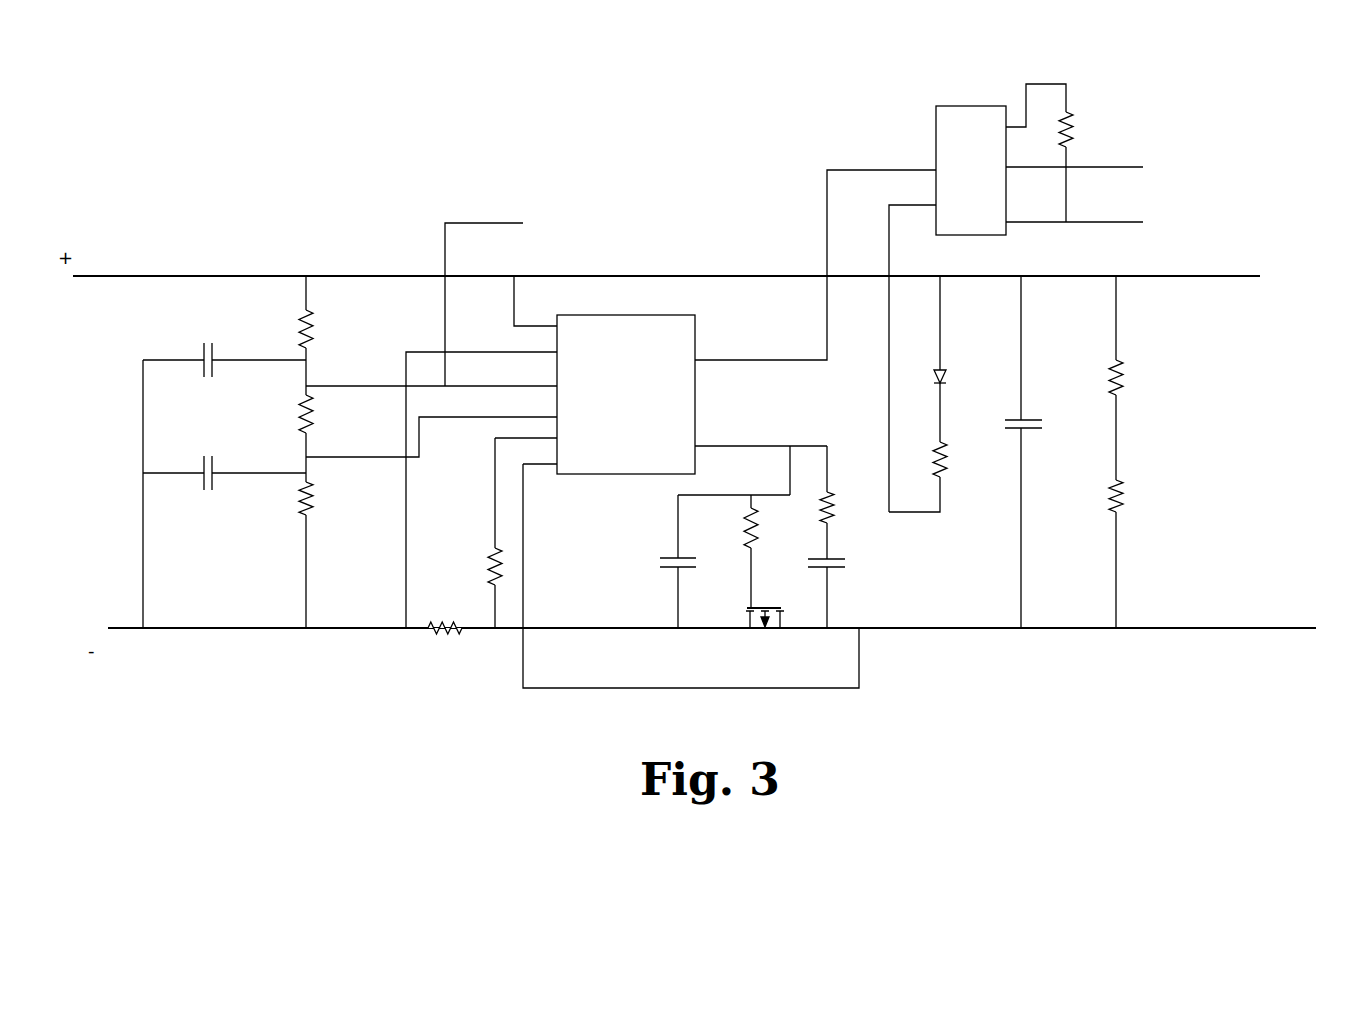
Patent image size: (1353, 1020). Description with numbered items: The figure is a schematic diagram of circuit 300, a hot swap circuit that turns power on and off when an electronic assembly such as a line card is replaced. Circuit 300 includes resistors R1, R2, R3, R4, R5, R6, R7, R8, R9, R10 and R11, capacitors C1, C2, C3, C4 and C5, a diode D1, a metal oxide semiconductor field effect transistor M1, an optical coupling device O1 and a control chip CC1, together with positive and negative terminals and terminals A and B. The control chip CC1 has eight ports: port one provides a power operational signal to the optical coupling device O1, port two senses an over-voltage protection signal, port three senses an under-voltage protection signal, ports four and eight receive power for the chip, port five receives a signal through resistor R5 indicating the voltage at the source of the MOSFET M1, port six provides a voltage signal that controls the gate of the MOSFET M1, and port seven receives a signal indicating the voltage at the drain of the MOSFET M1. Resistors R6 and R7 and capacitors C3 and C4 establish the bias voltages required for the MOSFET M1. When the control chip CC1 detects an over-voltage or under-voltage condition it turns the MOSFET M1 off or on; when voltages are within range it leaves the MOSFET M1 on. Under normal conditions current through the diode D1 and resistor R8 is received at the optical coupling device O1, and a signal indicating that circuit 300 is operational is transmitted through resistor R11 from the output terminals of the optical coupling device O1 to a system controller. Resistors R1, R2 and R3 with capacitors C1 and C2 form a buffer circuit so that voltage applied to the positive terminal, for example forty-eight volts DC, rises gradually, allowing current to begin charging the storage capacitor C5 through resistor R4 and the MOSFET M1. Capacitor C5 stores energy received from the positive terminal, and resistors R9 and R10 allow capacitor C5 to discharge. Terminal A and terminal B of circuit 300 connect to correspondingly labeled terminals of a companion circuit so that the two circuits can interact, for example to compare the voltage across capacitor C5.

The circuit 300 is at (330, 130).
The resistor R1 is at (329, 318).
The resistor R2 is at (428, 416).
The resistor R3 is at (324, 550).
The resistor R4 is at (443, 649).
The resistor R5 is at (468, 533).
The resistor R6 is at (727, 551).
The resistor R7 is at (845, 502).
The resistor R8 is at (939, 477).
The resistor R9 is at (1138, 378).
The resistor R10 is at (1140, 554).
The resistor R11 is at (1064, 153).
The capacitor C1 is at (224, 485).
The capacitor C2 is at (224, 498).
The capacitor C3 is at (695, 561).
The capacitor C4 is at (850, 590).
The capacitor C5 is at (1038, 452).
The diode D1 is at (956, 359).
The metal oxide semiconductor field effect transistor M1 is at (770, 596).
The optical coupling device O1 is at (1016, 309).
The control chip CC1 is at (671, 429).
The terminal A is at (1319, 629).
The terminal B is at (494, 299).